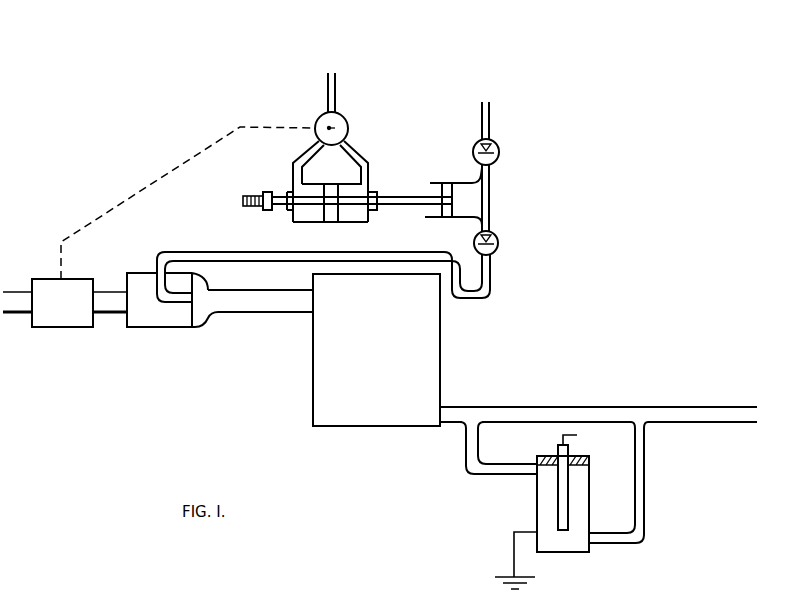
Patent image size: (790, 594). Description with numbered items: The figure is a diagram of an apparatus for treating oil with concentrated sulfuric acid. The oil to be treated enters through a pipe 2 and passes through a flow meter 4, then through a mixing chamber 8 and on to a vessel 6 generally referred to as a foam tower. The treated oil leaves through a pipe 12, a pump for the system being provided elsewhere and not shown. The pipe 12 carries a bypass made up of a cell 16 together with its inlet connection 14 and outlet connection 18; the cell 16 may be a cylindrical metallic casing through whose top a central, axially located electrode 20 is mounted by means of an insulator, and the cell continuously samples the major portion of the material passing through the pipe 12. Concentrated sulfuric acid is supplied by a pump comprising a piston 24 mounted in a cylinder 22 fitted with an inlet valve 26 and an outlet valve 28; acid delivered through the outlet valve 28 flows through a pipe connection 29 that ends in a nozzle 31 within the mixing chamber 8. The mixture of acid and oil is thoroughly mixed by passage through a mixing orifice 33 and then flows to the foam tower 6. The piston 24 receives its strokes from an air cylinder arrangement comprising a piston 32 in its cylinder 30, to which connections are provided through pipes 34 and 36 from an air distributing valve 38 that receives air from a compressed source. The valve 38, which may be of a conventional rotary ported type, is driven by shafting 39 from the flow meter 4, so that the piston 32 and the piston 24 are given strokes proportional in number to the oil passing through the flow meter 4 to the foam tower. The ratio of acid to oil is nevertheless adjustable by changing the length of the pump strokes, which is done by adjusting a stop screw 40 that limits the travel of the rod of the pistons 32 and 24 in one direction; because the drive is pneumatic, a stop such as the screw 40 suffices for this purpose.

The pipe 2 is at (21, 292).
The flow meter 4 is at (58, 320).
The vessel 6 is at (437, 372).
The mixing chamber 8 is at (160, 328).
The pipe 12 is at (570, 407).
The inlet connection 14 is at (510, 478).
The cell 16 is at (577, 552).
The outlet connection 18 is at (645, 493).
The electrode 20 is at (568, 492).
The cylinder 22 is at (470, 179).
The piston 24 is at (457, 200).
The inlet valve 26 is at (500, 152).
The outlet valve 28 is at (497, 241).
The pipe connection 29 is at (452, 300).
The cylinder 30 is at (298, 223).
The nozzle 31 is at (181, 305).
The piston 32 is at (332, 192).
The mixing orifice 33 is at (204, 291).
The pipe 34 is at (358, 145).
The pipe 36 is at (306, 149).
The air distributing valve 38 is at (343, 111).
The shafting 39 is at (208, 151).
The stop screw 40 is at (267, 192).